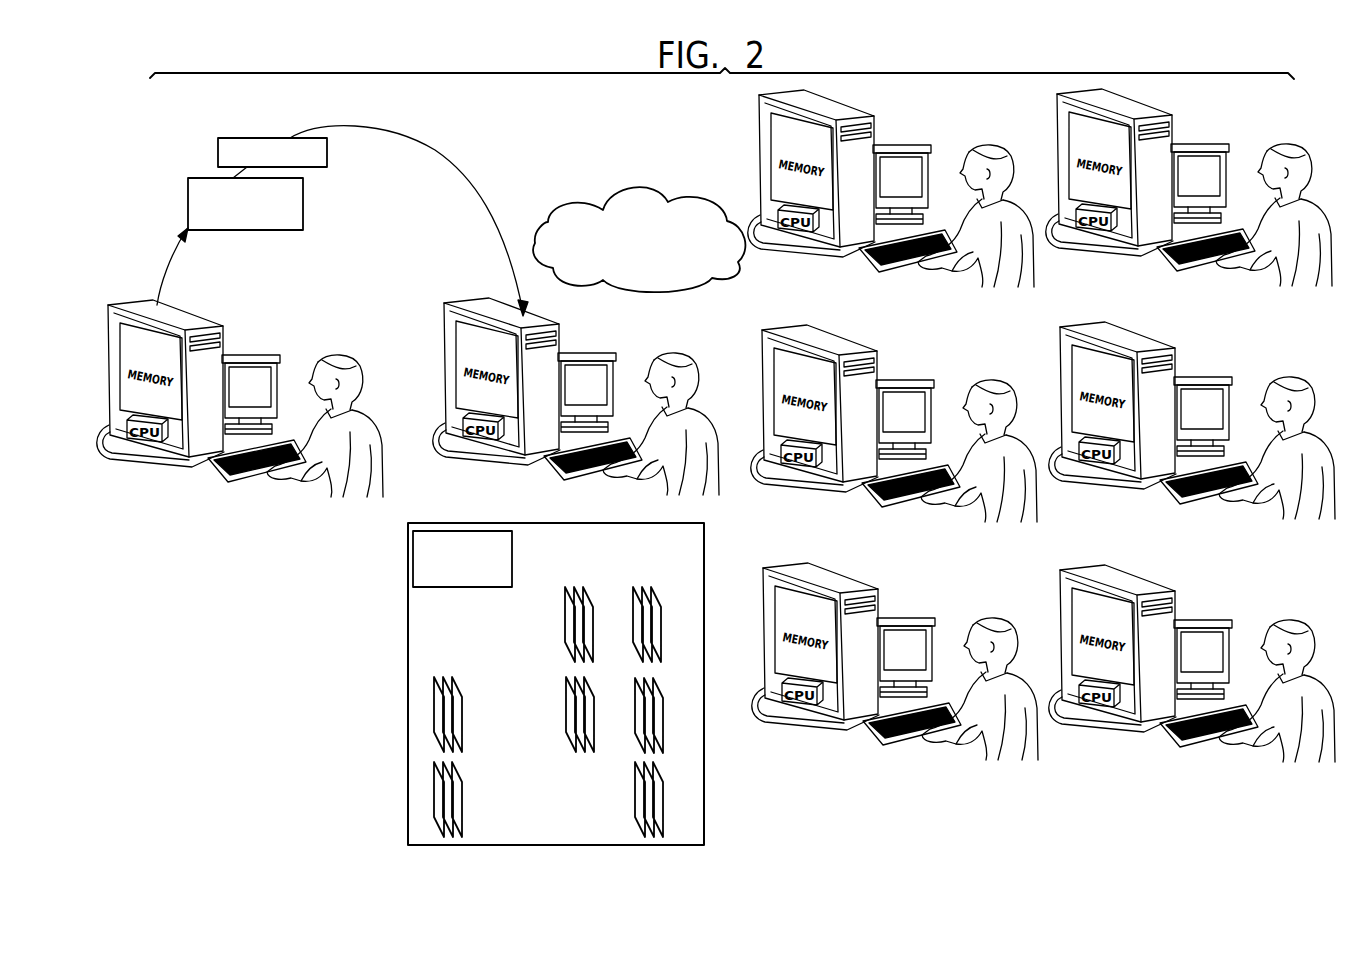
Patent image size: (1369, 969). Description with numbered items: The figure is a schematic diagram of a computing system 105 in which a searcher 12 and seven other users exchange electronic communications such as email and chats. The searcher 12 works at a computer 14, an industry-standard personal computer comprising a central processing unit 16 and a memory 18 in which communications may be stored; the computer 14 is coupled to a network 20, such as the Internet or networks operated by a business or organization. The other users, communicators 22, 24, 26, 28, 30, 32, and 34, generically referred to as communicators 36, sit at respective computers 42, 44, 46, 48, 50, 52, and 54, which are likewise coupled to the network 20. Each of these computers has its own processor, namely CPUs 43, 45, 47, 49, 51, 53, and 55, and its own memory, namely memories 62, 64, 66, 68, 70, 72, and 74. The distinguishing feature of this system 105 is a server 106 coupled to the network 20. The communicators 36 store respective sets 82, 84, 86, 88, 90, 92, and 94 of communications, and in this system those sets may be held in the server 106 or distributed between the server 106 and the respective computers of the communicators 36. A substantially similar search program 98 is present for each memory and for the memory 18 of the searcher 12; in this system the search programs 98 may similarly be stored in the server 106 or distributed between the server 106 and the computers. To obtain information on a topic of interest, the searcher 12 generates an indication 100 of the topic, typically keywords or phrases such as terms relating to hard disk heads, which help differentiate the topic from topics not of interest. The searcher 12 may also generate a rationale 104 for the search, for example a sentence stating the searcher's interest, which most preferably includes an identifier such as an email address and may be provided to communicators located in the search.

The searcher 12 is at (338, 357).
The communicator 22 is at (661, 410).
The communicator 24 is at (976, 206).
The communicator 26 is at (979, 441).
The communicator 28 is at (980, 677).
The communicator 30 is at (1274, 204).
The communicator 32 is at (1277, 439).
The communicator 34 is at (1277, 682).
The computer 14 is at (170, 316).
The computer 42 is at (496, 373).
The computer 44 is at (811, 169).
The computer 46 is at (814, 404).
The computer 48 is at (815, 642).
The computer 50 is at (1109, 168).
The computer 52 is at (1112, 401).
The computer 54 is at (1112, 644).
The central processing unit 16 is at (168, 432).
The CPU 43 is at (508, 428).
The CPU 45 is at (822, 220).
The CPU 47 is at (825, 455).
The CPU 49 is at (826, 693).
The CPU 51 is at (1120, 219).
The CPU 53 is at (1123, 452).
The CPU 55 is at (1123, 695).
The memory 18 is at (185, 358).
The memory 62 is at (505, 369).
The memory 64 is at (819, 161).
The memory 66 is at (822, 396).
The memory 68 is at (823, 634).
The memory 70 is at (1117, 160).
The memory 72 is at (1120, 393).
The memory 74 is at (1120, 636).
The network 20 is at (652, 186).
The communicators 36 is at (340, 580).
The search program 98 is at (408, 558).
The indication 100 is at (188, 196).
The rationale 104 is at (270, 138).
The computing system 105 is at (381, 671).
The server 106 is at (408, 826).
The set of communications 82 is at (587, 591).
The set of communications 84 is at (655, 591).
The set of communications 86 is at (456, 681).
The set of communications 88 is at (587, 681).
The set of communications 90 is at (655, 682).
The set of communications 92 is at (655, 766).
The set of communications 94 is at (456, 766).